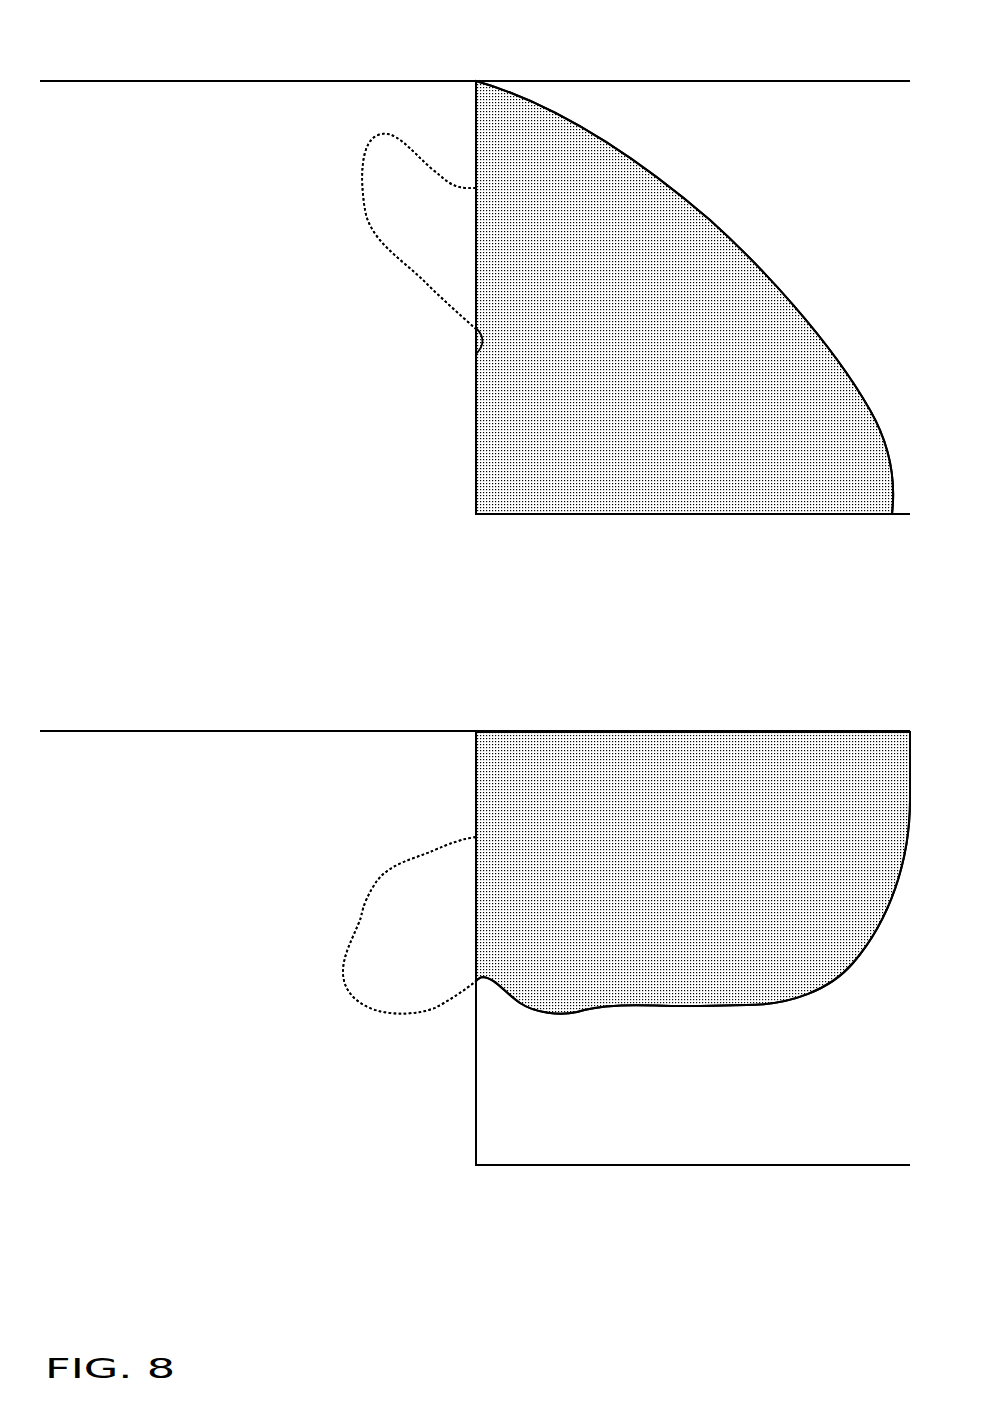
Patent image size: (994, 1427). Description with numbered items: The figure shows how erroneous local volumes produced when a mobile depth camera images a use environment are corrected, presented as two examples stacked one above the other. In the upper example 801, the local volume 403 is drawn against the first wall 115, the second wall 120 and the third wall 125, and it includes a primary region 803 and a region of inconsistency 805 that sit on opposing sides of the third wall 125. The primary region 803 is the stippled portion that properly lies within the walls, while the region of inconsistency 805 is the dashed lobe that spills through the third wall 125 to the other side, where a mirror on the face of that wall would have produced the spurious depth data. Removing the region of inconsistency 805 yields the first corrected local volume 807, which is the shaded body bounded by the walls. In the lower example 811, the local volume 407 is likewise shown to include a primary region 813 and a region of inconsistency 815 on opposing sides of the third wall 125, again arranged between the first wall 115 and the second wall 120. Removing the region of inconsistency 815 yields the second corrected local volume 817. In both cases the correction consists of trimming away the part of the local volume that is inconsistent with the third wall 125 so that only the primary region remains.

The first correction example 801 is at (287, 53).
The second correction example 811 is at (296, 713).
The first wall 115 is at (547, 81).
The second wall 120 is at (727, 514).
The third wall 125 is at (476, 502).
The local volume 403 is at (455, 147).
The local volume 407 is at (458, 813).
The primary region 803 is at (663, 177).
The region of inconsistency 805 is at (443, 225).
The first corrected local volume 807 is at (670, 420).
The primary region 813 is at (700, 1008).
The region of inconsistency 815 is at (438, 953).
The second corrected local volume 817 is at (660, 853).